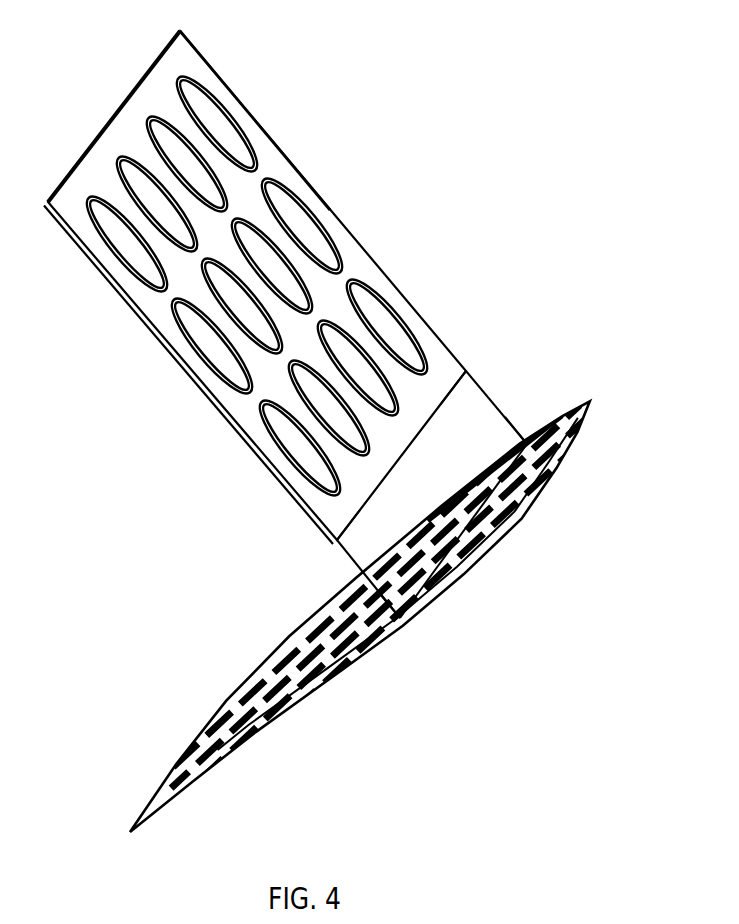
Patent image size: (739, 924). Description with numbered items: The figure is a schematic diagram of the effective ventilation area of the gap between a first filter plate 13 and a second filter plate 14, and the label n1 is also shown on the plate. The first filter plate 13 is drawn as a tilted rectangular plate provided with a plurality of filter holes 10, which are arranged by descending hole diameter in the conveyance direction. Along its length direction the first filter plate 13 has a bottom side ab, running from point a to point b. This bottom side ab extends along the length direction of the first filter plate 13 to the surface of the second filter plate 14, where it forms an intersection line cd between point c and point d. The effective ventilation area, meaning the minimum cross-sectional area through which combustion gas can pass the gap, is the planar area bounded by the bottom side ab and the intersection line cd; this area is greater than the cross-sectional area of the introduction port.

The filter holes 10 is at (208, 117).
The first filter plate 13 is at (353, 258).
The second filter plate 14 is at (277, 727).
The refractive index region of plate n1 is at (130, 250).
The end point of bottom side ab a is at (461, 371).
The end point of bottom side ab b is at (337, 548).
The end point of intersection line cd c is at (399, 629).
The end point of intersection line cd d is at (524, 418).